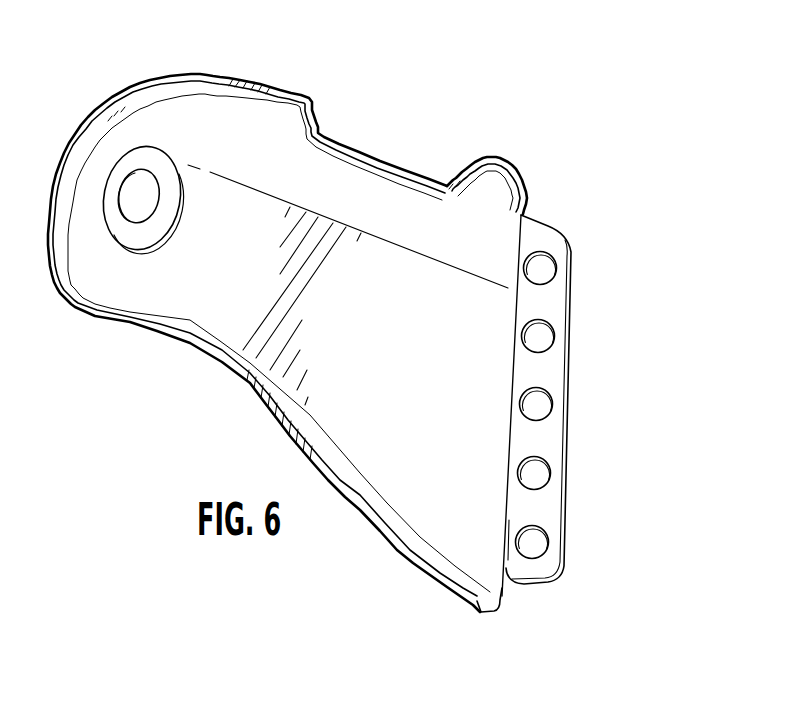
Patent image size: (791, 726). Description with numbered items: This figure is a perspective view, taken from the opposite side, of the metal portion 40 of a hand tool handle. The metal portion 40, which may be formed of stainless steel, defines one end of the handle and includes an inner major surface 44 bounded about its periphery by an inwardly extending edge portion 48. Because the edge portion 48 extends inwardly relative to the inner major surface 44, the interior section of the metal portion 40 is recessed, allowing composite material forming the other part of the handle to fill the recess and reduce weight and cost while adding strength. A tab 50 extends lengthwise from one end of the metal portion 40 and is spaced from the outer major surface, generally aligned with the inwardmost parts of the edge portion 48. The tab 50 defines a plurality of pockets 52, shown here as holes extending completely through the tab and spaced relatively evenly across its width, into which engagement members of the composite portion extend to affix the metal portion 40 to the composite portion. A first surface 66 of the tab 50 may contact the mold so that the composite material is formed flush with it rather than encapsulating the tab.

The metal portion 40 is at (343, 306).
The inner major surface 44 is at (287, 306).
The inwardly extending edge portion 48 is at (260, 88).
The tab 50 is at (558, 247).
The pockets 52 is at (545, 340).
The first surface of the tab 66 is at (548, 508).